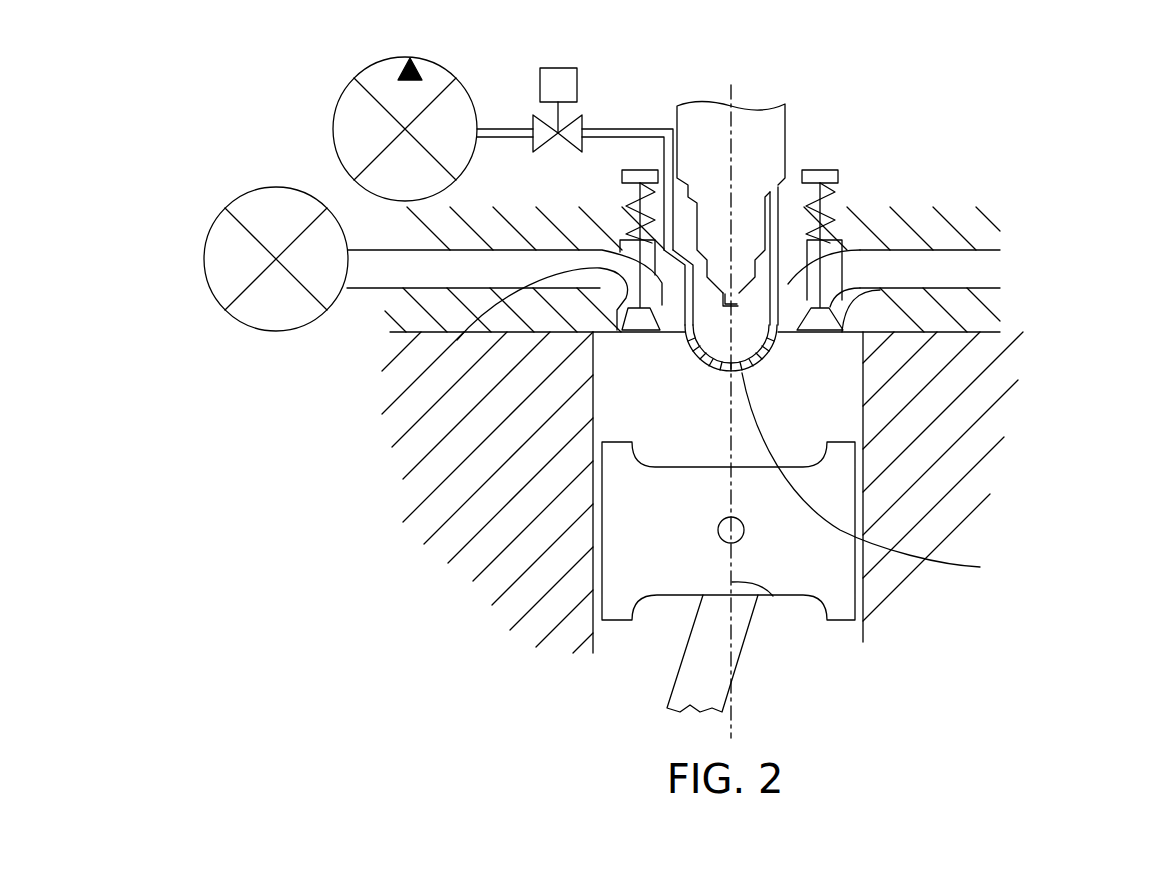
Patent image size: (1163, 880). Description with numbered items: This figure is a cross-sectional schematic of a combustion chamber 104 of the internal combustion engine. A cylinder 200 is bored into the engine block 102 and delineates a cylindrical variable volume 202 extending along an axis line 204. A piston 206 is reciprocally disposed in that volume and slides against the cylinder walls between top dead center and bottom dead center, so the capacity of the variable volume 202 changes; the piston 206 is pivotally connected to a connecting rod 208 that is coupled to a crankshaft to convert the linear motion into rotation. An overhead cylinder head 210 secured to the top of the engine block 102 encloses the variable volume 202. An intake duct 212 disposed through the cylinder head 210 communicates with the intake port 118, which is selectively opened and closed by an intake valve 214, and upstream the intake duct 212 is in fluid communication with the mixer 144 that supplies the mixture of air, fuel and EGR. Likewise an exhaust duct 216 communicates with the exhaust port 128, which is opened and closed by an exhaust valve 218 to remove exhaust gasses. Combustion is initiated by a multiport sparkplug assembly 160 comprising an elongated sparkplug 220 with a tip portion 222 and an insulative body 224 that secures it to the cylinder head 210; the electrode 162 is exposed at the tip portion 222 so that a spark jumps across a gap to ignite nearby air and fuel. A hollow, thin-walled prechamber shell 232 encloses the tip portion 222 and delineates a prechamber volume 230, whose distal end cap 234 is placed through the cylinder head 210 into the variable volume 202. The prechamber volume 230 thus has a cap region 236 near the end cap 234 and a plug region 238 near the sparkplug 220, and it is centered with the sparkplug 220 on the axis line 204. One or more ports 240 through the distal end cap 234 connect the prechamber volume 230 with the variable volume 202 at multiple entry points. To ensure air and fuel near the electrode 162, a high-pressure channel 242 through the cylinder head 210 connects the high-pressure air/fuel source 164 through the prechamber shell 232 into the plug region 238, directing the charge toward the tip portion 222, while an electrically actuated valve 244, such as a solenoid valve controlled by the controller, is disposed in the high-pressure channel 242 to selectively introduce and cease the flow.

The engine block 102 is at (870, 365).
The combustion chamber 104 is at (647, 655).
The intake port 118 is at (457, 340).
The exhaust port 128 is at (985, 356).
The mixer 144 is at (233, 278).
The sparkplug assembly 160 is at (769, 382).
The electrode 162 is at (685, 335).
The high-pressure air/fuel source 164 is at (345, 95).
The cylinder 200 is at (593, 340).
The variable volume 202 is at (840, 408).
The axis line 204 is at (773, 598).
The piston 206 is at (833, 500).
The connecting rod 208 is at (713, 648).
The cylinder head 210 is at (957, 323).
The intake duct 212 is at (438, 267).
The intake valve 214 is at (636, 323).
The exhaust duct 216 is at (957, 268).
The exhaust valve 218 is at (858, 250).
The sparkplug 220 is at (763, 145).
The tip portion 222 is at (745, 250).
The body 224 is at (765, 123).
The prechamber volume 230 is at (717, 334).
The prechamber shell 232 is at (616, 255).
The distal end cap 234 is at (703, 345).
The cap region 236 is at (748, 342).
The plug region 238 is at (768, 277).
The ports 240 is at (892, 473).
The high-pressure channel 242 is at (628, 128).
The electrically actuated valve 244 is at (533, 120).